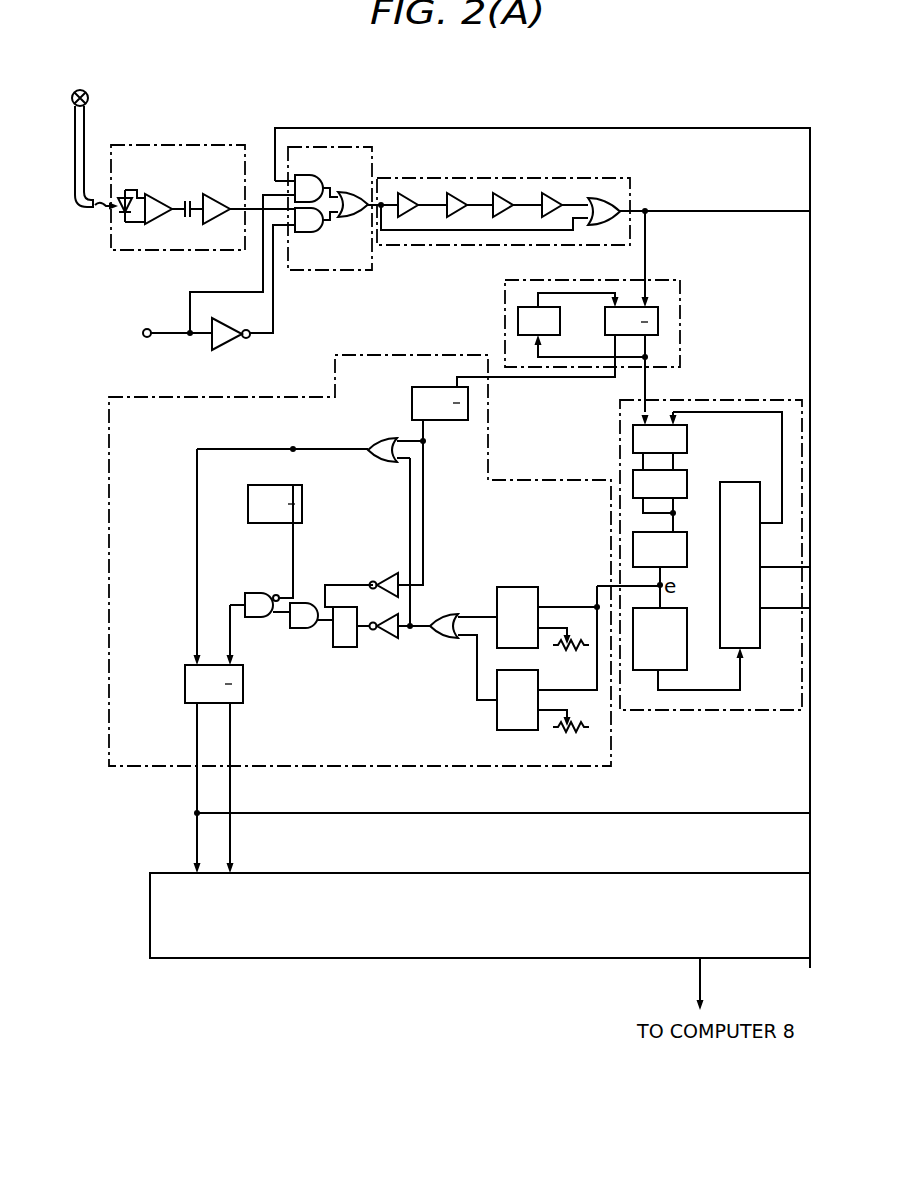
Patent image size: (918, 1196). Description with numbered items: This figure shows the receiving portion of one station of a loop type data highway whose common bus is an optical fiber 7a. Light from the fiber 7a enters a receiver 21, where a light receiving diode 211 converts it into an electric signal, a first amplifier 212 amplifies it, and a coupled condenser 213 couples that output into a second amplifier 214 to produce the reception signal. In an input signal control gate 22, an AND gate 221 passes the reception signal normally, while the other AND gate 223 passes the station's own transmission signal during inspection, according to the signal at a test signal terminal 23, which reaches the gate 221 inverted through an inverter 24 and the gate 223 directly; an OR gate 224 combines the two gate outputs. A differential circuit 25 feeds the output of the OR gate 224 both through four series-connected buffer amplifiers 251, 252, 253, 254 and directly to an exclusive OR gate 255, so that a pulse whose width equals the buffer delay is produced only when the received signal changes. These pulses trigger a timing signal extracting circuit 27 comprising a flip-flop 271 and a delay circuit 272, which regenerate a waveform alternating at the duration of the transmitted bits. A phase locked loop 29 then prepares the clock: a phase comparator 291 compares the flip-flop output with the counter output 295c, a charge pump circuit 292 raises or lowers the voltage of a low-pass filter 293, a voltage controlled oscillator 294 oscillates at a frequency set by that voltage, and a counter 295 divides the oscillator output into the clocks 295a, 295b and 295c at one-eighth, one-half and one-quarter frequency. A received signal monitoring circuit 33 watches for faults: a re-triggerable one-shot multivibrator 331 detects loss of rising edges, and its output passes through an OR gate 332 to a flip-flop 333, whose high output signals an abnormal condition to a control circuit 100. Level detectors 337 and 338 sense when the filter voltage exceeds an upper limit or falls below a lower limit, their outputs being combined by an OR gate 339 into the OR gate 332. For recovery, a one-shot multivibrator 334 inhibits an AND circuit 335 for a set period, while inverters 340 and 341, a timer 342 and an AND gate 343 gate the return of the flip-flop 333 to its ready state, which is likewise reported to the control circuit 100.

The common bus 7a is at (88, 113).
The receiver 21 is at (165, 145).
The light receiving diode 211 is at (118, 212).
The first amplifier 212 is at (160, 194).
The coupled condenser 213 is at (186, 217).
The second amplifier 214 is at (218, 194).
The input signal control gate 22 is at (322, 147).
The AND gate 221 is at (308, 232).
The AND gate 223 is at (322, 171).
The OR gate 224 is at (352, 216).
The test signal terminal 23 is at (147, 329).
The inverter 24 is at (223, 318).
The differential circuit 25 is at (470, 245).
The buffer amplifier 251 is at (410, 193).
The buffer amplifier 252 is at (458, 193).
The buffer amplifier 253 is at (506, 193).
The buffer amplifier 254 is at (554, 193).
The exclusive OR gate 255 is at (603, 199).
The timing signal extracting circuit 27 is at (680, 300).
The flip-flop 271 is at (658, 328).
The delay circuit 272 is at (560, 318).
The phase locked loop 29 is at (718, 400).
The phase comparator 291 is at (633, 438).
The charge pump circuit 292 is at (633, 478).
The low-pass filter 293 is at (633, 545).
The voltage controlled oscillator 294 is at (645, 670).
The counter 295 is at (725, 482).
The counter output 295a is at (772, 608).
The counter output 295b is at (787, 567).
The counter output 295c is at (764, 523).
The received signal monitoring circuit 33 is at (395, 355).
The re-triggerable one-shot multivibrator 331 is at (440, 420).
The OR gate 332 is at (380, 438).
The flip-flop 333 is at (185, 675).
The one-shot multivibrator 334 is at (302, 505).
The AND circuit 335 is at (258, 593).
The level detector 337 is at (517, 587).
The level detector 338 is at (497, 718).
The OR gate 339 is at (438, 638).
The inverter 340 is at (388, 638).
The inverter 341 is at (385, 573).
The timer 342 is at (345, 647).
The AND gate 343 is at (300, 628).
The control circuit 100 is at (318, 958).